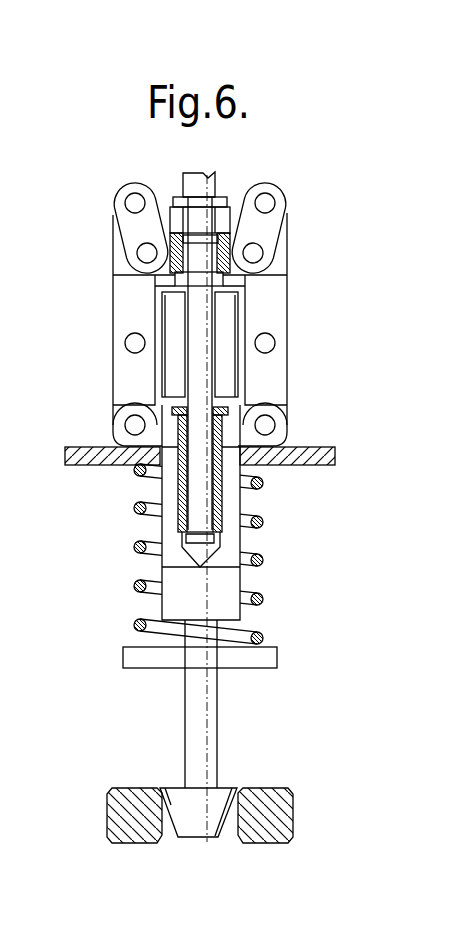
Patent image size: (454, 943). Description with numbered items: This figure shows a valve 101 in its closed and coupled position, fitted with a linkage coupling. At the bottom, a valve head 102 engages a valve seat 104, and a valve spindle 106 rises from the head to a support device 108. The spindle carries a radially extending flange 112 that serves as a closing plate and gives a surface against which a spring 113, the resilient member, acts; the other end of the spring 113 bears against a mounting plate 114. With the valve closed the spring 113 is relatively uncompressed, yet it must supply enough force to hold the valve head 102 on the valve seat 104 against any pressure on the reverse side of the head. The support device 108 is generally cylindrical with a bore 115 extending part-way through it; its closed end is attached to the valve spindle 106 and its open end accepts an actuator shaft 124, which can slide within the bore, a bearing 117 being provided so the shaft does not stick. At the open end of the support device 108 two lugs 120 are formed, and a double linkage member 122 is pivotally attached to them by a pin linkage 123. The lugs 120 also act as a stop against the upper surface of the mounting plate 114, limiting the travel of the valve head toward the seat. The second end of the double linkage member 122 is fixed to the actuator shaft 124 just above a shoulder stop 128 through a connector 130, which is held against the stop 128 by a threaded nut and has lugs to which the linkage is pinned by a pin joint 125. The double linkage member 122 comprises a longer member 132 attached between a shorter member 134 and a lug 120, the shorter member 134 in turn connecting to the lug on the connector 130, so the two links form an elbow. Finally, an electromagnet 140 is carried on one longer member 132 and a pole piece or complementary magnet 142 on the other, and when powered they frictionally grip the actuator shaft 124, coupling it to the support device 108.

The valve 101 is at (262, 703).
The valve head 102 is at (193, 827).
The valve seat 104 is at (263, 832).
The valve spindle 106 is at (195, 733).
The support device 108 is at (218, 582).
The flange 112 is at (148, 662).
The spring 113 is at (132, 583).
The mounting plate 114 is at (312, 457).
The bore 115 is at (182, 488).
The bearing 117 is at (218, 495).
The lugs 120 is at (142, 410).
The double linkage member 122 is at (296, 250).
The pin linkage 123 is at (130, 423).
The actuator shaft 124 is at (198, 358).
The pin joint 125 is at (264, 200).
The stop 128 is at (177, 281).
The connector 130 is at (197, 233).
The longer member 132 is at (265, 312).
The shorter member 134 is at (133, 233).
The electromagnet 140 is at (226, 300).
The pole piece 142 is at (168, 325).